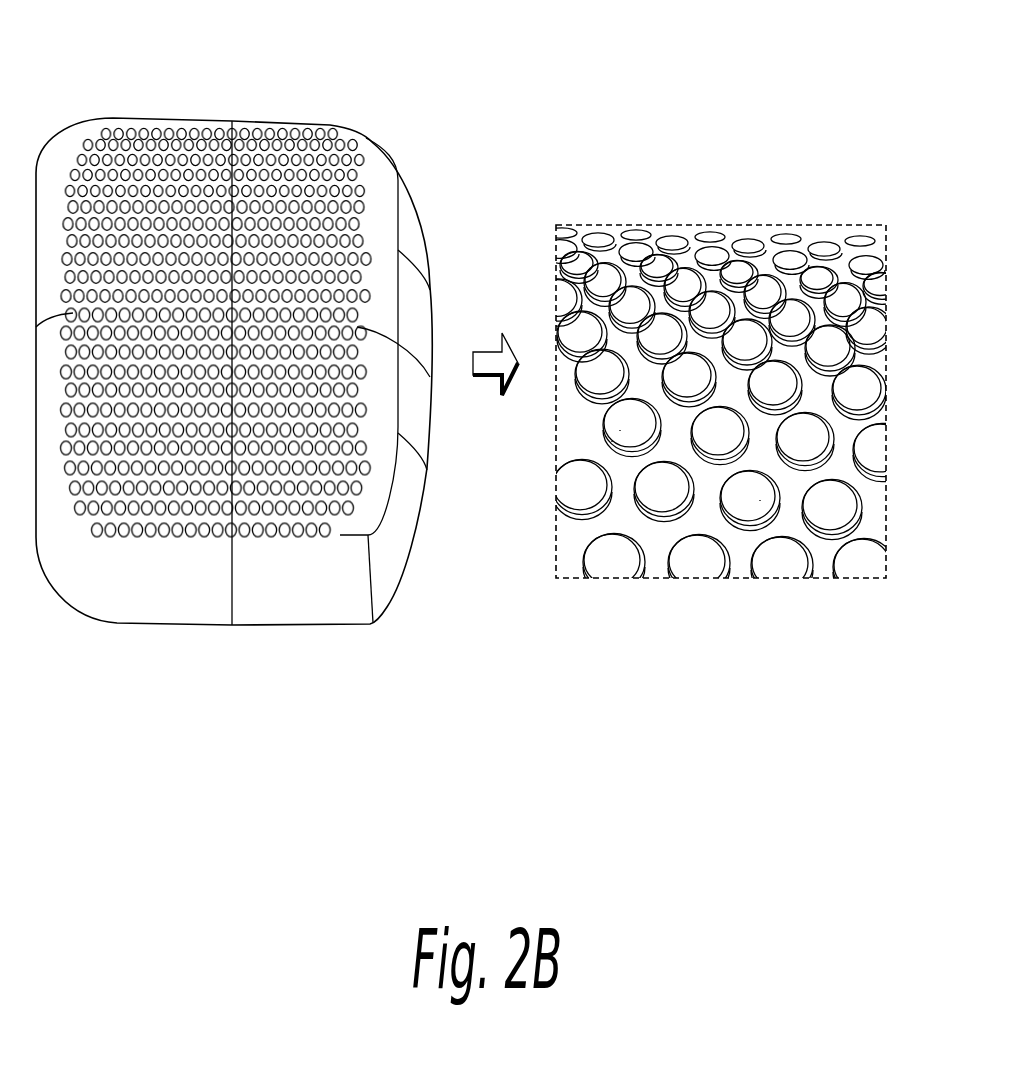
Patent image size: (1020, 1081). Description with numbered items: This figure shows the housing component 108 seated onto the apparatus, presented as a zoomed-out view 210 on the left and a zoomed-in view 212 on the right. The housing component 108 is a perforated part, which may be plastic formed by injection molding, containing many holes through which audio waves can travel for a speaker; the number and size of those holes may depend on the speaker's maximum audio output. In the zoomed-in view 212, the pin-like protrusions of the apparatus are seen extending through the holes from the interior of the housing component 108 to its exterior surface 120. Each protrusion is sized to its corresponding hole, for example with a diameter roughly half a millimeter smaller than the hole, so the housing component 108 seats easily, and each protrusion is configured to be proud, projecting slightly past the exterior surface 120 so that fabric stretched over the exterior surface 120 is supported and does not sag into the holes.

The housing component 108 is at (273, 625).
The exterior surface 120 is at (873, 532).
The zoomed-out view 210 is at (379, 348).
The zoomed-in view 212 is at (723, 308).